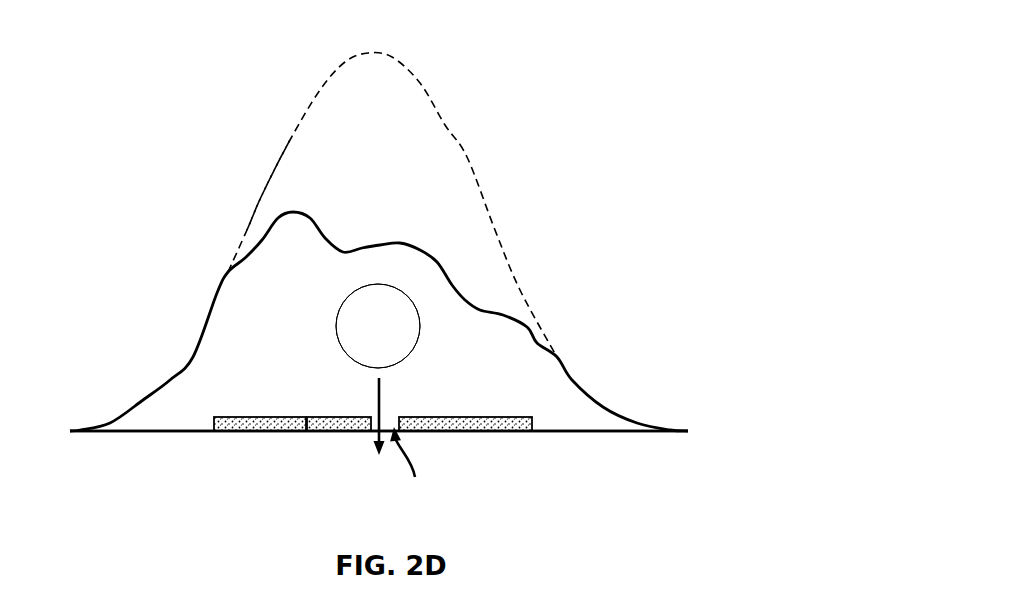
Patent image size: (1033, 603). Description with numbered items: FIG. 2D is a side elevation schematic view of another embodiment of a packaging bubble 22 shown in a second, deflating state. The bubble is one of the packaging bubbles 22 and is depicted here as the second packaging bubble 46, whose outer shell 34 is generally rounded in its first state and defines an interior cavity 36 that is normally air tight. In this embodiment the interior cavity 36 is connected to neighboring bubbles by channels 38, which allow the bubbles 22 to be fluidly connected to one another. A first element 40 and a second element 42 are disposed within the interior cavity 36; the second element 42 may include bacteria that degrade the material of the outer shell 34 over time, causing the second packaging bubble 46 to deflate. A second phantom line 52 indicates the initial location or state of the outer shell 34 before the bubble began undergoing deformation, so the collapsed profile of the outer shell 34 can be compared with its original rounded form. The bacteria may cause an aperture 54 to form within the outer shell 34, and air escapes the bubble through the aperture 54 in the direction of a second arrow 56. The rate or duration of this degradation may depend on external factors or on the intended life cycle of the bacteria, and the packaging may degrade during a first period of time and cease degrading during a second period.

The packaging bubble 22 is at (568, 68).
The outer shell 34 is at (263, 240).
The interior cavity 36 is at (460, 326).
The channel 38 is at (325, 331).
The first element 40 is at (337, 432).
The second element 42 is at (248, 432).
The second packaging bubble 46 is at (220, 148).
The second phantom line 52 is at (420, 83).
The aperture 54 is at (411, 470).
The second arrow 56 is at (379, 393).